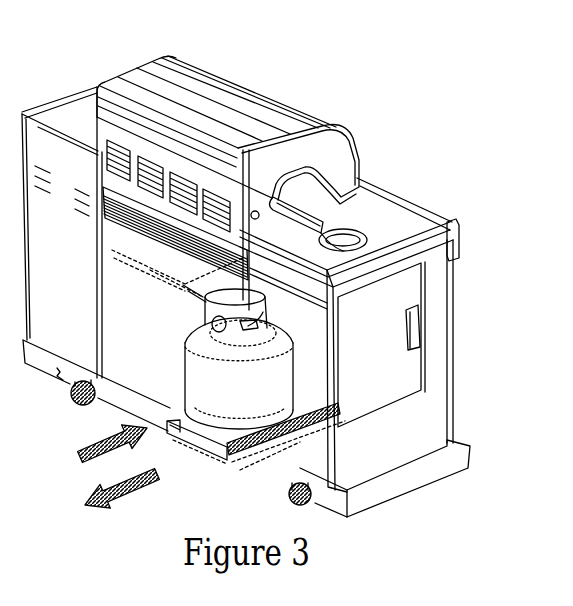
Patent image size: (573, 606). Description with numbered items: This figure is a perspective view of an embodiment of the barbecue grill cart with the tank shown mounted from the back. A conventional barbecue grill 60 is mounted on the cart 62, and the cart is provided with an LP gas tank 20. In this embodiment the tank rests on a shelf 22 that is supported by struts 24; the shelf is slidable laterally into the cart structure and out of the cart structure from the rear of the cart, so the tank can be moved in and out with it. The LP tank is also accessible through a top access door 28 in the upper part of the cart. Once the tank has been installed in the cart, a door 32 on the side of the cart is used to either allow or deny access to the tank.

The barbecue grill 60 is at (193, 66).
The top access door 28 is at (323, 225).
The door 32 is at (412, 365).
The cart 62 is at (447, 481).
The LP gas tank 20 is at (218, 413).
The shelf 22 is at (222, 442).
The struts 24 is at (266, 440).